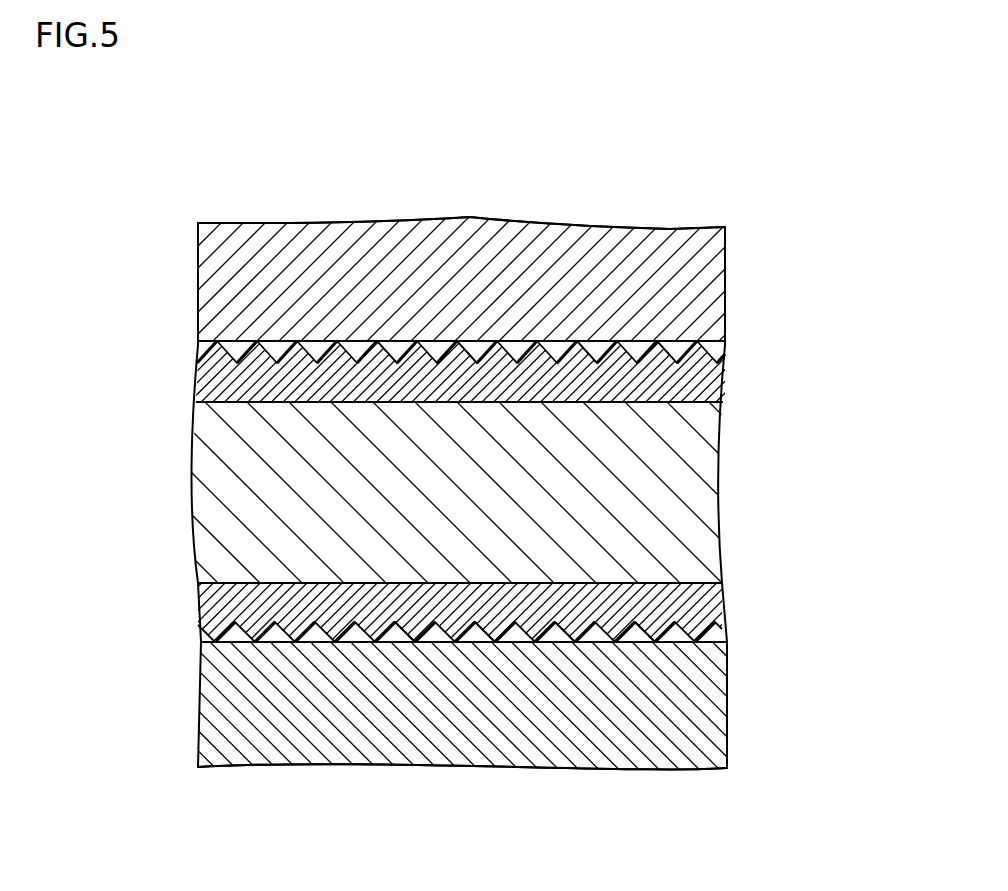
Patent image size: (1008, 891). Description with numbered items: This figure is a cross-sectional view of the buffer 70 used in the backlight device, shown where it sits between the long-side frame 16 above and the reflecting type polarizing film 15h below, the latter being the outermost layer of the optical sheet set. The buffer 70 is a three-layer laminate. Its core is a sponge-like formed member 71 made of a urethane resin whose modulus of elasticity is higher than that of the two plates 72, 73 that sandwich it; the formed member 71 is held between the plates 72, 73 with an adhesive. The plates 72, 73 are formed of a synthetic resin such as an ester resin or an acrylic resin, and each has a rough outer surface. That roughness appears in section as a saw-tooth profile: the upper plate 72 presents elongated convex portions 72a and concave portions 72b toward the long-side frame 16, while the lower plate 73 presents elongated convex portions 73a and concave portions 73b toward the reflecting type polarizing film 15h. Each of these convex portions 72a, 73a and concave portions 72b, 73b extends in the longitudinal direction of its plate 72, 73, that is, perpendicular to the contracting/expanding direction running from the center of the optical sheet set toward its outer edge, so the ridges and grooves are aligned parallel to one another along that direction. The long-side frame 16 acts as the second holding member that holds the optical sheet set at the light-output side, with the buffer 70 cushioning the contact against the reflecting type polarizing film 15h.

The long-side frame 16 is at (697, 292).
The reflecting type polarizing film 15h is at (697, 712).
The buffer 70 is at (468, 490).
The formed member 71 is at (697, 503).
The plate 72 is at (700, 383).
The convex portions 72a is at (657, 342).
The concave portions 72b is at (477, 363).
The plate 73 is at (464, 602).
The convex portions 73a is at (655, 643).
The concave portions 73b is at (475, 622).